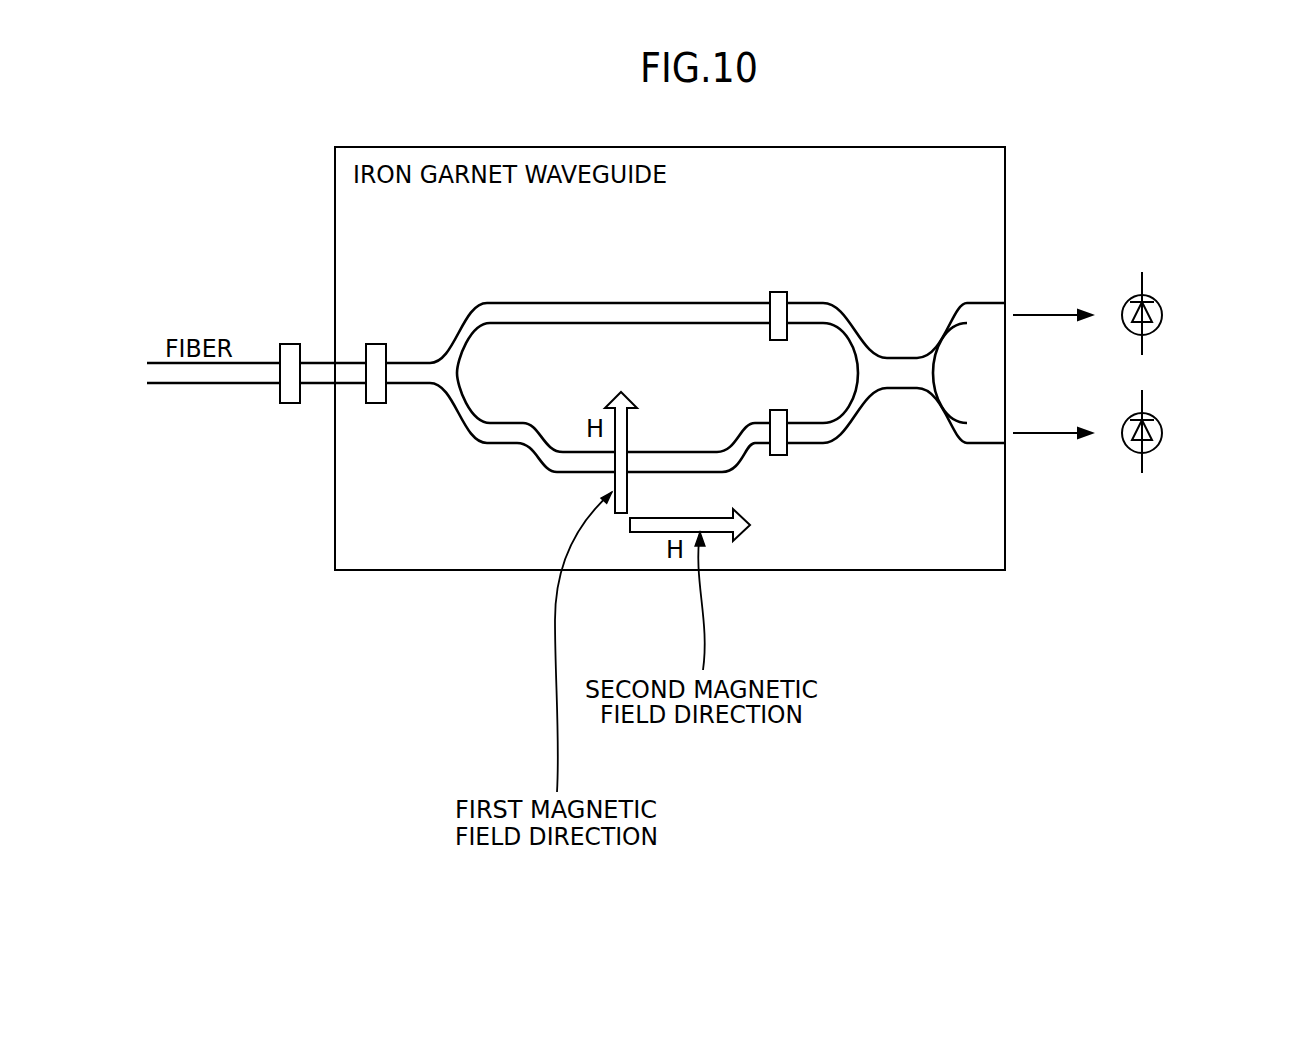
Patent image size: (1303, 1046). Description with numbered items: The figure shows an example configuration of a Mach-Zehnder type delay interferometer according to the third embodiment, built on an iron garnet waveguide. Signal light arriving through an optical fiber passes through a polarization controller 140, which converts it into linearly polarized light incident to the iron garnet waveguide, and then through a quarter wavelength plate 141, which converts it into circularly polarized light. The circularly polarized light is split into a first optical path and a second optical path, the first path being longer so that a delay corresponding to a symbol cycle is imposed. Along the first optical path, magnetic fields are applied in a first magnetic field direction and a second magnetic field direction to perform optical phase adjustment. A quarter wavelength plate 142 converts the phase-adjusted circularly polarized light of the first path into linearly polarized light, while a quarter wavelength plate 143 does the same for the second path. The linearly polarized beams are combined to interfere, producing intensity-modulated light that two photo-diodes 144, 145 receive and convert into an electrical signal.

The polarization controller 140 is at (290, 344).
The quarter wavelength plate 141 is at (376, 344).
The quarter wavelength plate 142 is at (778, 455).
The quarter wavelength plate 143 is at (778, 292).
The photo-diode 144 is at (1155, 268).
The photo-diode 145 is at (1155, 478).